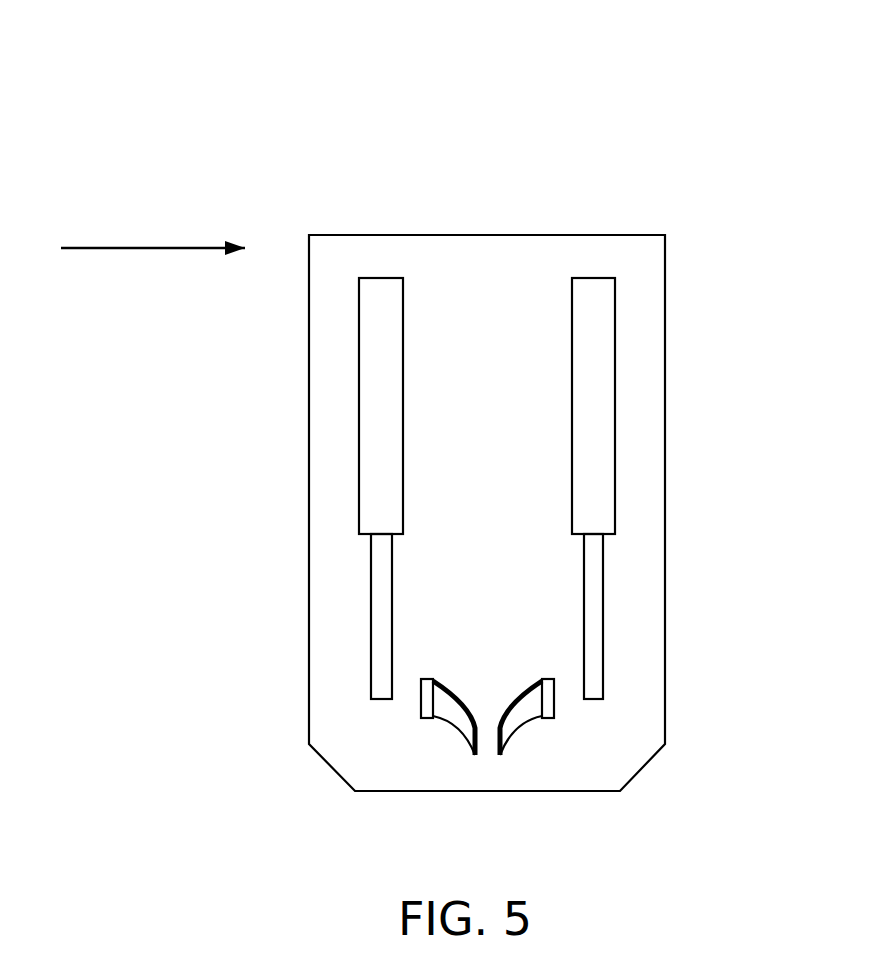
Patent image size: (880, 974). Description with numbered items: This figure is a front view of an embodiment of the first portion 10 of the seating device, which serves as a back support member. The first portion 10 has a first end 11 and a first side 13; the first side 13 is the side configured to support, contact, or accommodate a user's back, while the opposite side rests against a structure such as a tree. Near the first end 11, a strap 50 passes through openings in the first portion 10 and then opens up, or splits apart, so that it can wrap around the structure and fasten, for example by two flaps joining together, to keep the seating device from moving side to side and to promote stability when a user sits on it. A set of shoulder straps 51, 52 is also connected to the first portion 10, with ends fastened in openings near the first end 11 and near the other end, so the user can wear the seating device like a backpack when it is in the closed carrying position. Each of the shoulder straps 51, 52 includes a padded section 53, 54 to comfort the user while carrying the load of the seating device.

The first portion 10 is at (303, 143).
The first end 11 is at (267, 778).
The first side 13 is at (507, 265).
The strap 50 is at (457, 720).
The shoulder strap 51 is at (383, 609).
The shoulder strap 52 is at (594, 645).
The padded section 53 is at (380, 387).
The padded section 54 is at (588, 377).